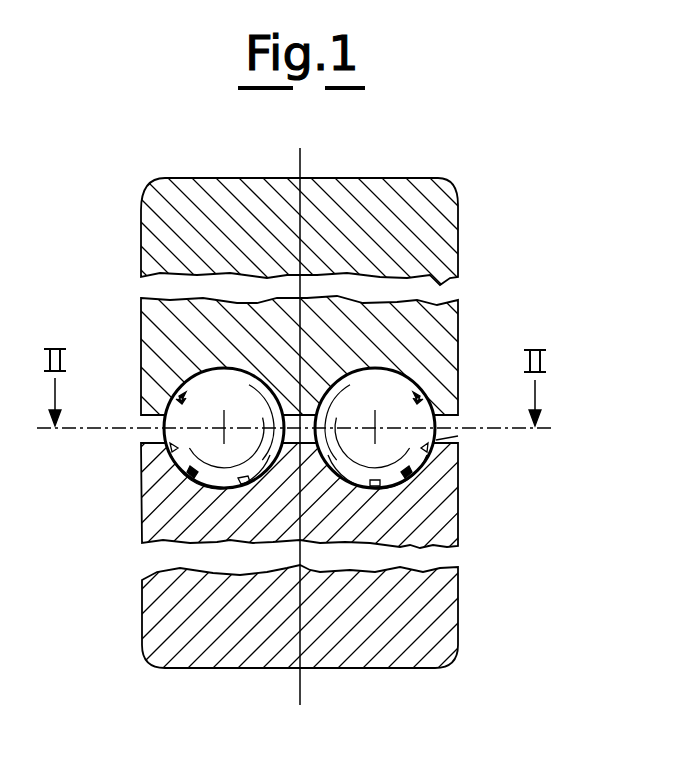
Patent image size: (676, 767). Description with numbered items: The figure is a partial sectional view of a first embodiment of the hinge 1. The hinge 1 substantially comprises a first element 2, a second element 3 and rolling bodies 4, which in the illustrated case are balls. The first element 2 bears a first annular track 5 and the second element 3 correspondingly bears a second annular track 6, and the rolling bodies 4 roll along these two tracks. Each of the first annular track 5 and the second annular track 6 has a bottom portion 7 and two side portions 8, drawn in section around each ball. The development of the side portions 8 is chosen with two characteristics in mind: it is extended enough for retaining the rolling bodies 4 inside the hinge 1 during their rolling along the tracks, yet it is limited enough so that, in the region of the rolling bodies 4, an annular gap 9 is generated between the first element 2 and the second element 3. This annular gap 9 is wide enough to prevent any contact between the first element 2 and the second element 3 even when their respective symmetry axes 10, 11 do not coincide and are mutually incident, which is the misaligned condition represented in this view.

The hinge 1 is at (537, 172).
The first element 2 is at (141, 325).
The second element 3 is at (141, 505).
The rolling bodies 4 is at (238, 399).
The first annular track 5 is at (176, 401).
The second annular track 6 is at (193, 480).
The bottom portion 7 is at (243, 486).
The side portions 8 is at (174, 448).
The annular gap 9 is at (450, 436).
The symmetry axis 10 is at (300, 165).
The symmetry axis 11 is at (296, 692).